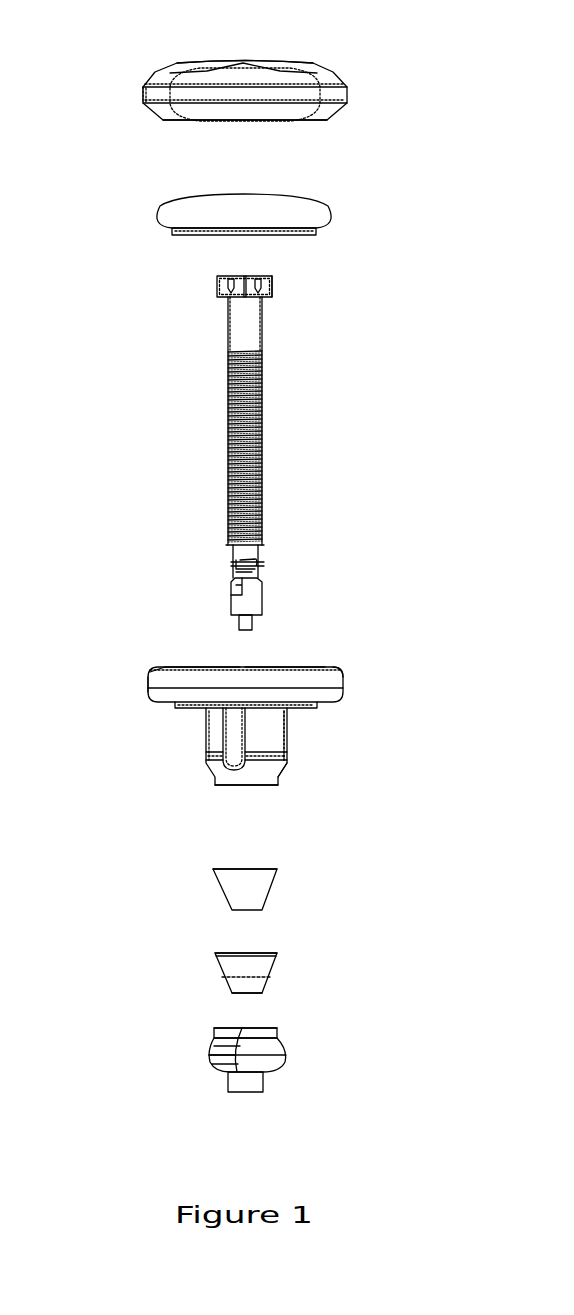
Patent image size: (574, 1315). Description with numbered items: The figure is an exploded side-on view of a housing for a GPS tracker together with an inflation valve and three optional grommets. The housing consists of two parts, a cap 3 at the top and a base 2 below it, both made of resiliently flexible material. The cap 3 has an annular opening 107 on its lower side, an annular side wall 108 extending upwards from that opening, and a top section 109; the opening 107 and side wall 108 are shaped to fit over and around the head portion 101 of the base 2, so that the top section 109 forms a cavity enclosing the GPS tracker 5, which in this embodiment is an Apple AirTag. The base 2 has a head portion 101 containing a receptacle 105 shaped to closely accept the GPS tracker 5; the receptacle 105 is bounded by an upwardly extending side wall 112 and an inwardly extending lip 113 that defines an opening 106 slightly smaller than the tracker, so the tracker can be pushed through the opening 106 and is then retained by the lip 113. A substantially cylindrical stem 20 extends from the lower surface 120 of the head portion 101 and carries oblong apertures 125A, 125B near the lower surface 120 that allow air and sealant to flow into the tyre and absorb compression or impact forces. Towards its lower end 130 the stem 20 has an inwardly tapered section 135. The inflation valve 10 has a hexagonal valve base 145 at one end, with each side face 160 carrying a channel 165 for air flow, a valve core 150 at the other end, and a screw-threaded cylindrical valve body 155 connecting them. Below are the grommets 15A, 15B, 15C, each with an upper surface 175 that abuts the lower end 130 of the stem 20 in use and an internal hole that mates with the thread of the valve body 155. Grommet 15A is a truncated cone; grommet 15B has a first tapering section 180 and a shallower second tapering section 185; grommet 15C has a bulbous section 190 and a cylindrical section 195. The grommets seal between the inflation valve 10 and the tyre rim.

The cap 3 is at (348, 98).
The top section 109 is at (292, 62).
The side wall 108 is at (142, 97).
The opening 107 is at (253, 122).
The GPS tracker 5 is at (258, 236).
The inflation valve 10 is at (250, 449).
The valve base 145 is at (222, 292).
The channel 165 is at (262, 283).
The side face 160 is at (268, 298).
The valve body 155 is at (228, 446).
The valve core 150 is at (262, 597).
The base 2 is at (248, 664).
The opening 106 is at (175, 667).
The receptacle 105 is at (300, 667).
The lip 113 is at (158, 668).
The side wall 112 is at (328, 680).
The head portion 101 is at (158, 680).
The lower surface 120 is at (312, 705).
The stem 20 is at (268, 772).
The oblong aperture 125A is at (240, 765).
The oblong aperture 125B is at (282, 738).
The inwardly tapered section 135 is at (280, 768).
The lower end 130 is at (215, 785).
The upper surface 175 is at (240, 869).
The grommet 15A is at (272, 886).
The grommet 15B is at (250, 946).
The first tapering section 180 is at (262, 968).
The second tapering section 185 is at (235, 985).
The grommet 15C is at (252, 1065).
The bulbous section 190 is at (220, 1055).
The cylindrical section 195 is at (235, 1080).